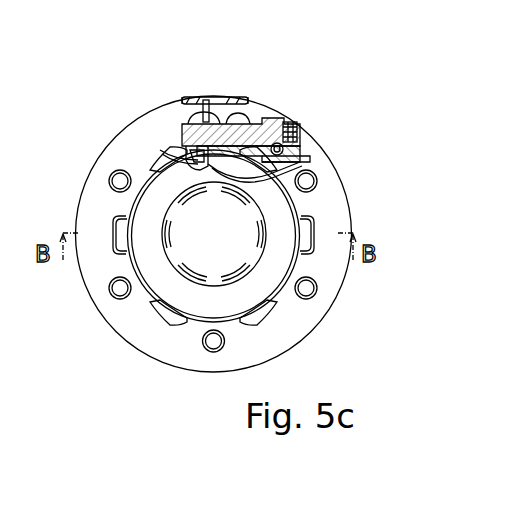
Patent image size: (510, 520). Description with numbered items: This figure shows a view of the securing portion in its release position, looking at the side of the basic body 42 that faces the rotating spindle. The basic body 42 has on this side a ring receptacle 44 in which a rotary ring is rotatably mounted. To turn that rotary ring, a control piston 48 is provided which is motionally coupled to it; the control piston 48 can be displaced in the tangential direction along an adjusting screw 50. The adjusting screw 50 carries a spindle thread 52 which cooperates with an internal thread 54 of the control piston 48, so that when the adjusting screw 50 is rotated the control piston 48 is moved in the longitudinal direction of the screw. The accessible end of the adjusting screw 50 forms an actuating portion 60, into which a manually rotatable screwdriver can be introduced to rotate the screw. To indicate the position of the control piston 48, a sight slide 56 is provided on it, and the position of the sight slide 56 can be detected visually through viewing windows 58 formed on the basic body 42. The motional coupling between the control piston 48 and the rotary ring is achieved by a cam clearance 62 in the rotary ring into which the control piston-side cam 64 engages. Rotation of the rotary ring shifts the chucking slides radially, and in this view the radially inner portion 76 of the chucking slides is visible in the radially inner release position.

The basic body 42 is at (98, 192).
The ring receptacle 44 is at (292, 204).
The control piston 48 is at (204, 152).
The adjusting screw 50 is at (250, 130).
The spindle thread 52 is at (228, 126).
The internal thread 54 is at (196, 124).
The sight slide 56 is at (205, 100).
The viewing windows 58 is at (190, 99).
The actuating portion 60 is at (296, 130).
The cam clearance 62 is at (215, 170).
The cam 64 is at (200, 160).
The radially inner portion 76 is at (240, 280).